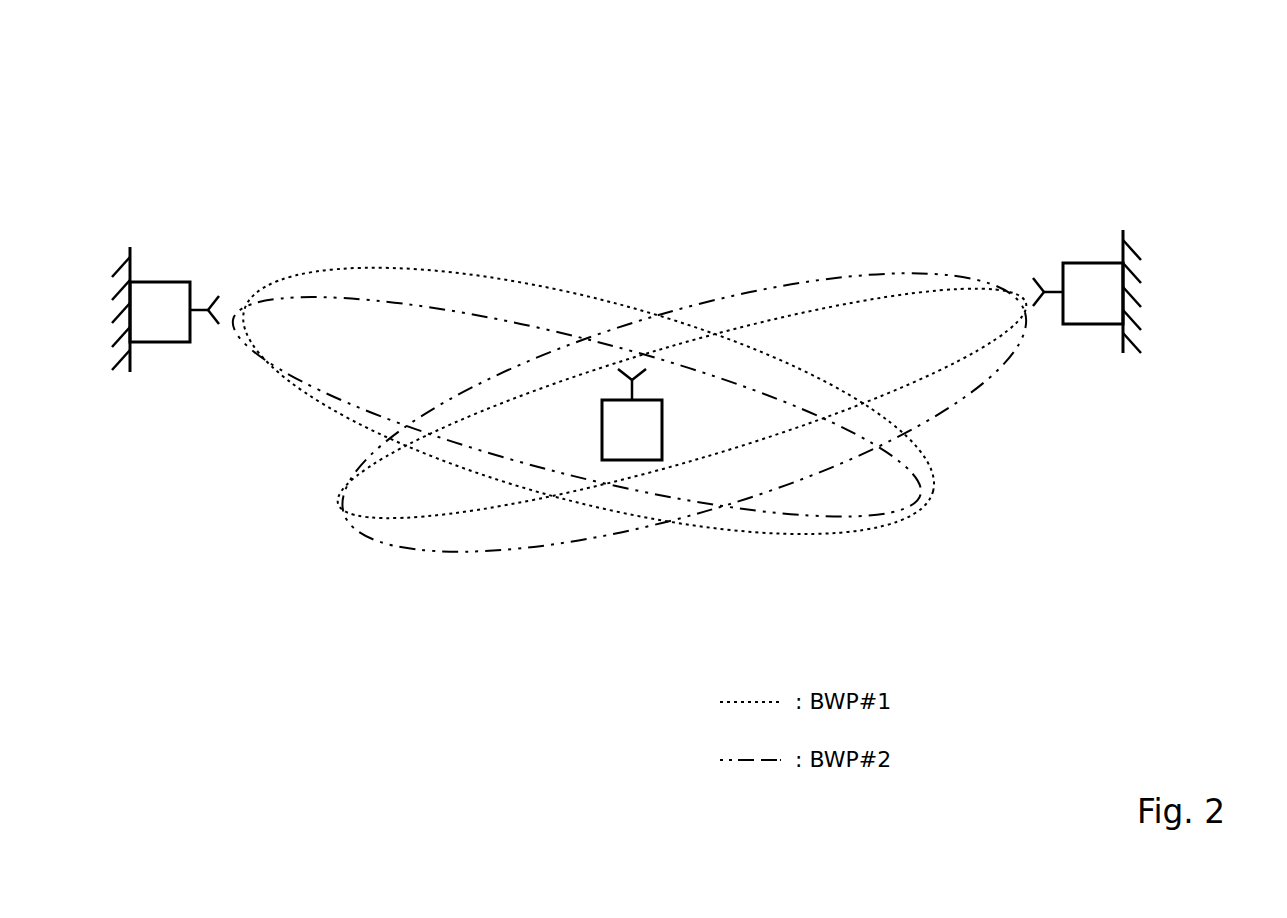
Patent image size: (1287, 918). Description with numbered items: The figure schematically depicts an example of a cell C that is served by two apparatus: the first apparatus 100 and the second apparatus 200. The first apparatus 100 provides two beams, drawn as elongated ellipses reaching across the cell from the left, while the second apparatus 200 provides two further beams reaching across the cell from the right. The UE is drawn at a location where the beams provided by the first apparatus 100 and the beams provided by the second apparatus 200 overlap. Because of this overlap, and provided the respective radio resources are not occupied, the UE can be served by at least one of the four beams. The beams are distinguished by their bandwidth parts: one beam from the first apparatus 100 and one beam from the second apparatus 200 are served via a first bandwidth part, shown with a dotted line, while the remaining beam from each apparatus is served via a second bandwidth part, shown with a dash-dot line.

The first apparatus 100 is at (182, 325).
The second apparatus 200 is at (1114, 307).
The element UE is at (650, 446).
The cell C is at (1036, 137).